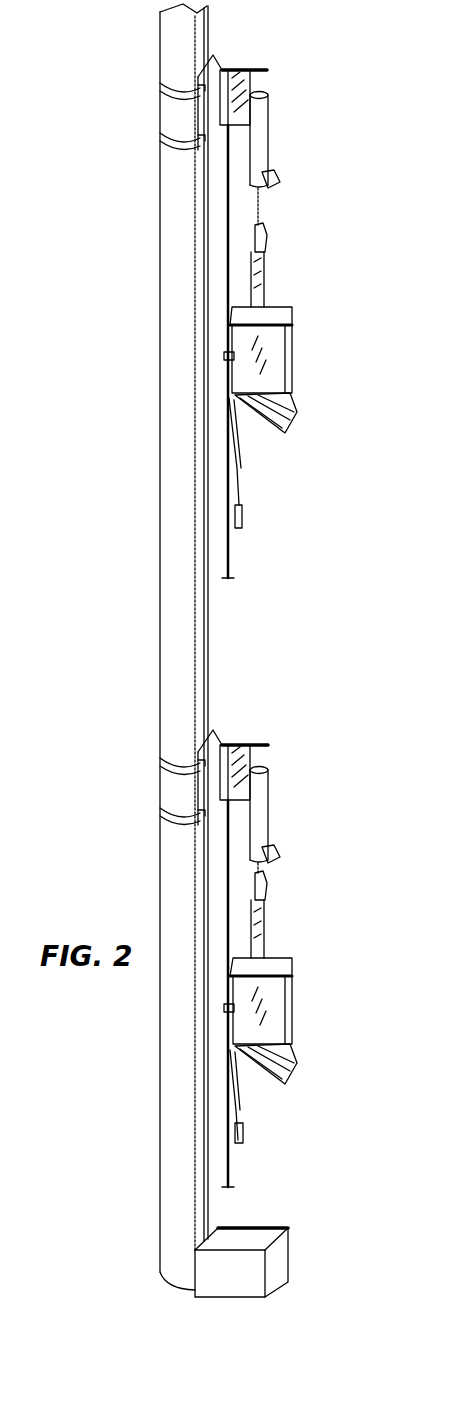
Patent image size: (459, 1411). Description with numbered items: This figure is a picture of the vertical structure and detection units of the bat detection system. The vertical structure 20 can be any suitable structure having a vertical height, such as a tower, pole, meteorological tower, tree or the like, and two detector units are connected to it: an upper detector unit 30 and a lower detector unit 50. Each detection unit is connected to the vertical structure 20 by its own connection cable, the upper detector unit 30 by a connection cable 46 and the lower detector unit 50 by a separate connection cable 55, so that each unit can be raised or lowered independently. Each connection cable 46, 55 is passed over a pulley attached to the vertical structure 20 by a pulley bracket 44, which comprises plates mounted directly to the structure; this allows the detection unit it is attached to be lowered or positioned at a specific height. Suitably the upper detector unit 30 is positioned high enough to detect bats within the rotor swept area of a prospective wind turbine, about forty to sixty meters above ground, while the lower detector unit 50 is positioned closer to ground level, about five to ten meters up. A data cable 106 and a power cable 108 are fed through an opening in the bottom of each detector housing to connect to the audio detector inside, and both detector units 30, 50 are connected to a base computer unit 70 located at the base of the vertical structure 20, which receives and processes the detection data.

The vertical structure 20 is at (158, 222).
The upper detector unit 30 is at (330, 278).
The pulley bracket 44 is at (247, 66).
The connection cable 46 is at (260, 200).
The lower detector unit 50 is at (338, 928).
The connection cable 55 is at (263, 868).
The base computer unit 70 is at (284, 1250).
The data cable 106 is at (245, 472).
The power cable 108 is at (245, 517).